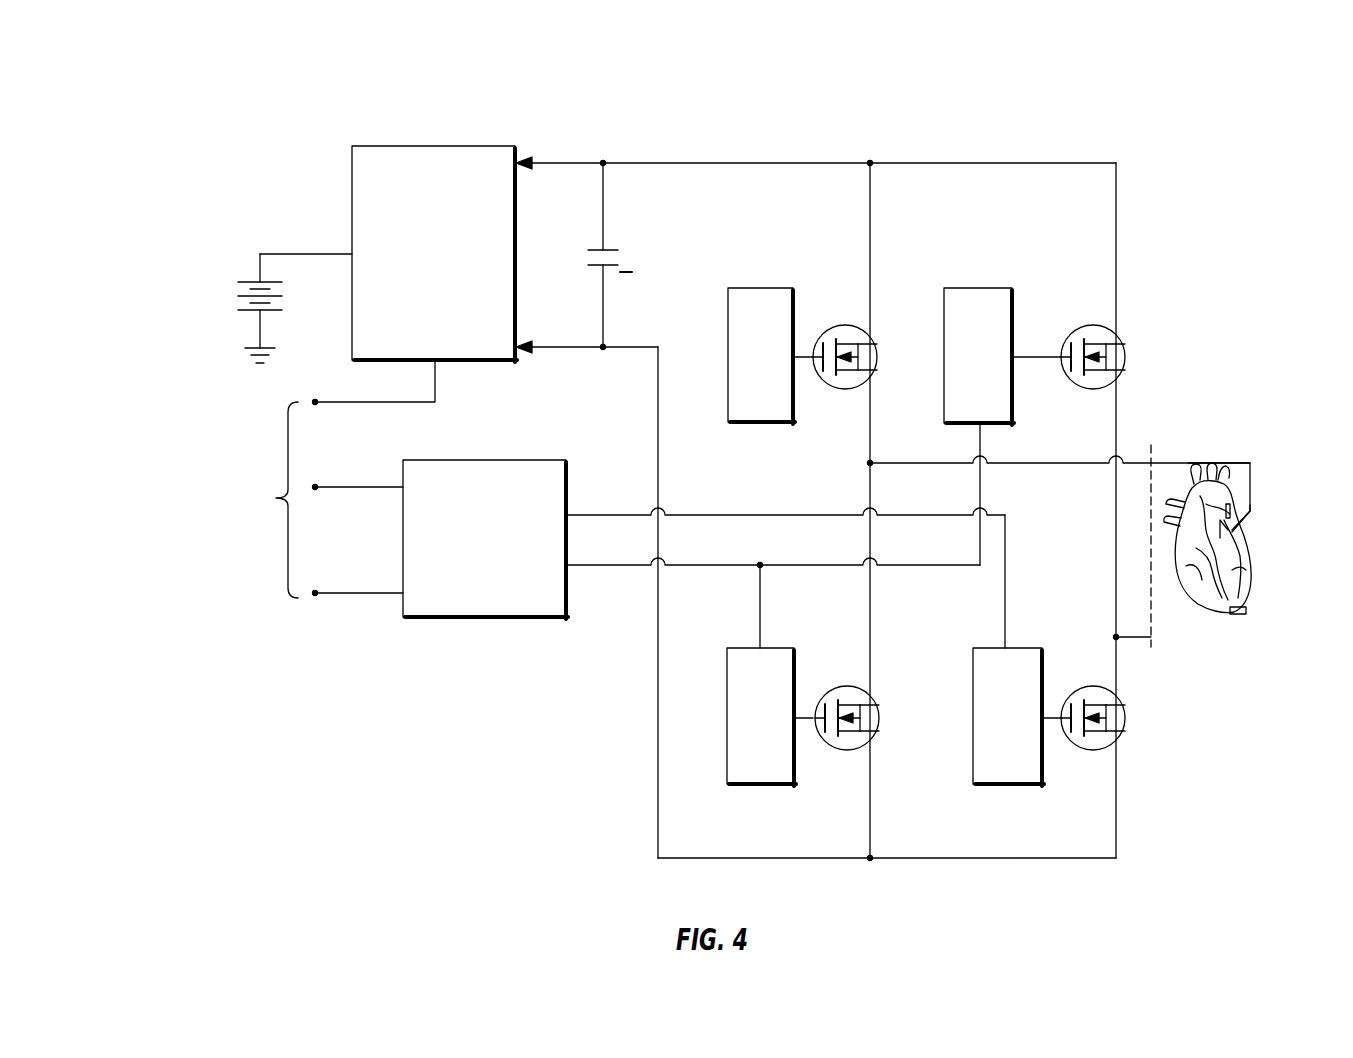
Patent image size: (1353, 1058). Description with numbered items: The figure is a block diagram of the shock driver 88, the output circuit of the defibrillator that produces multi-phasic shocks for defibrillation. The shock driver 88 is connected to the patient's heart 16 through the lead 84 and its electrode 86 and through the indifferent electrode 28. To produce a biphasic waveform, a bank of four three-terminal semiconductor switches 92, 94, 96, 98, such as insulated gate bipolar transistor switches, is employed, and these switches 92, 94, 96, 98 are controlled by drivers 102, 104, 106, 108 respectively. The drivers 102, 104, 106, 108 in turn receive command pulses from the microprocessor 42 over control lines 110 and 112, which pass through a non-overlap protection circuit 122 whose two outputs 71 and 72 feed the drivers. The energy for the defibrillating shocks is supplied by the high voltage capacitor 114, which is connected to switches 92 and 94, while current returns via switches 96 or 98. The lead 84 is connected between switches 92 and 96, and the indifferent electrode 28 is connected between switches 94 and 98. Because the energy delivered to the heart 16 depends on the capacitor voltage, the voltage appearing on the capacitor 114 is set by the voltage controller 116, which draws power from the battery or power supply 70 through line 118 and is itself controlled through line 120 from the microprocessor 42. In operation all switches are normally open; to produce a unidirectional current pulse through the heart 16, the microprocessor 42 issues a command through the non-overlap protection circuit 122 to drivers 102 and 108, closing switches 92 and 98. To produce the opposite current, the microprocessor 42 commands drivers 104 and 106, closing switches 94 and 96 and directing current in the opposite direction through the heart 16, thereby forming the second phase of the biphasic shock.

The shock driver 88 is at (544, 118).
The voltage controller 116 is at (433, 146).
The battery or power supply 70 is at (250, 282).
The line 118 is at (302, 250).
The high voltage capacitor 114 is at (600, 262).
The line 120 is at (435, 396).
The microprocessor 42 is at (176, 466).
The control line 110 is at (368, 487).
The control line 112 is at (368, 596).
The non-overlap protection circuit 122 is at (488, 618).
The first control line 71 is at (694, 515).
The second control line 72 is at (694, 565).
The driver 102 is at (793, 322).
The three-terminal semiconductor switch 92 is at (872, 352).
The driver 104 is at (978, 288).
The three-terminal semiconductor switch 94 is at (1122, 352).
The driver 106 is at (760, 784).
The three-terminal semiconductor switch 96 is at (878, 722).
The driver 108 is at (1008, 784).
The three-terminal semiconductor switch 98 is at (1124, 722).
The lead 84 is at (1188, 463).
The electrode 86 is at (1230, 530).
The heart 16 is at (1244, 596).
The indifferent electrode 28 is at (1152, 650).